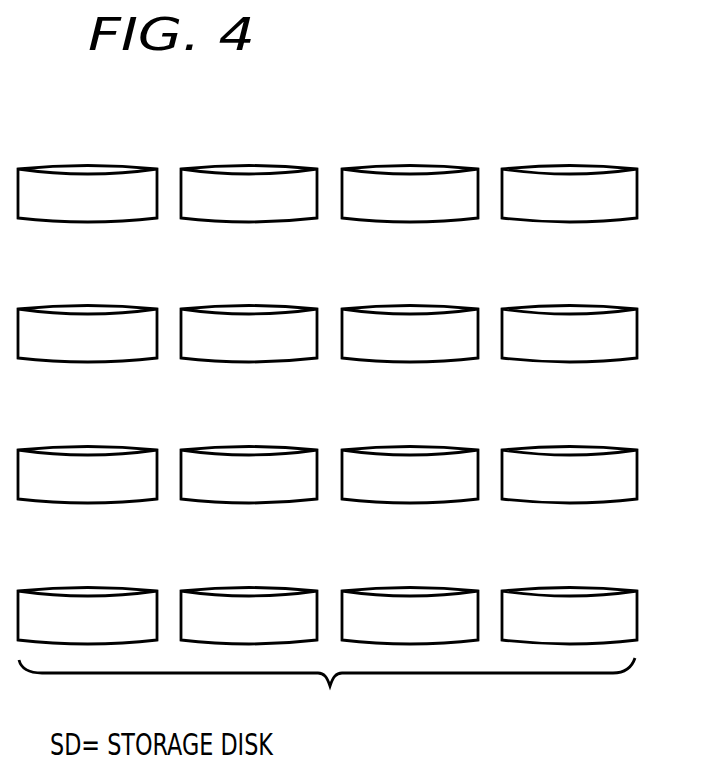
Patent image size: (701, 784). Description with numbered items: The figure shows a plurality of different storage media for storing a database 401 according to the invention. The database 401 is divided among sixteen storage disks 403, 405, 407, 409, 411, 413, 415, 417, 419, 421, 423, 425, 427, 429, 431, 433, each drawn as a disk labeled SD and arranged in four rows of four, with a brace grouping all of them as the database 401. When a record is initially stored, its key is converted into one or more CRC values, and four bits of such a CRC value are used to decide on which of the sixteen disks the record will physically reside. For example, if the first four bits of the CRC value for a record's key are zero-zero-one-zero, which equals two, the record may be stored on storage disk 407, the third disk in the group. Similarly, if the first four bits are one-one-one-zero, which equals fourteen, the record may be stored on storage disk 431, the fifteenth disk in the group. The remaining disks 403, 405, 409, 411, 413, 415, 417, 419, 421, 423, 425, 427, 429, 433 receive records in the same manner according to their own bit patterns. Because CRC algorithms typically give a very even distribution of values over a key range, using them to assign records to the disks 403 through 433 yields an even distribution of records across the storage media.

The database 401 is at (327, 693).
The storage disk 403 is at (91, 166).
The storage disk 405 is at (252, 166).
The storage disk 407 is at (413, 166).
The storage disk 409 is at (573, 166).
The storage disk 411 is at (91, 306).
The storage disk 413 is at (252, 306).
The storage disk 415 is at (413, 306).
The storage disk 417 is at (573, 306).
The storage disk 419 is at (91, 447).
The storage disk 421 is at (252, 447).
The storage disk 423 is at (413, 447).
The storage disk 425 is at (573, 447).
The storage disk 427 is at (91, 588).
The storage disk 429 is at (252, 588).
The storage disk 431 is at (413, 588).
The storage disk 433 is at (573, 588).